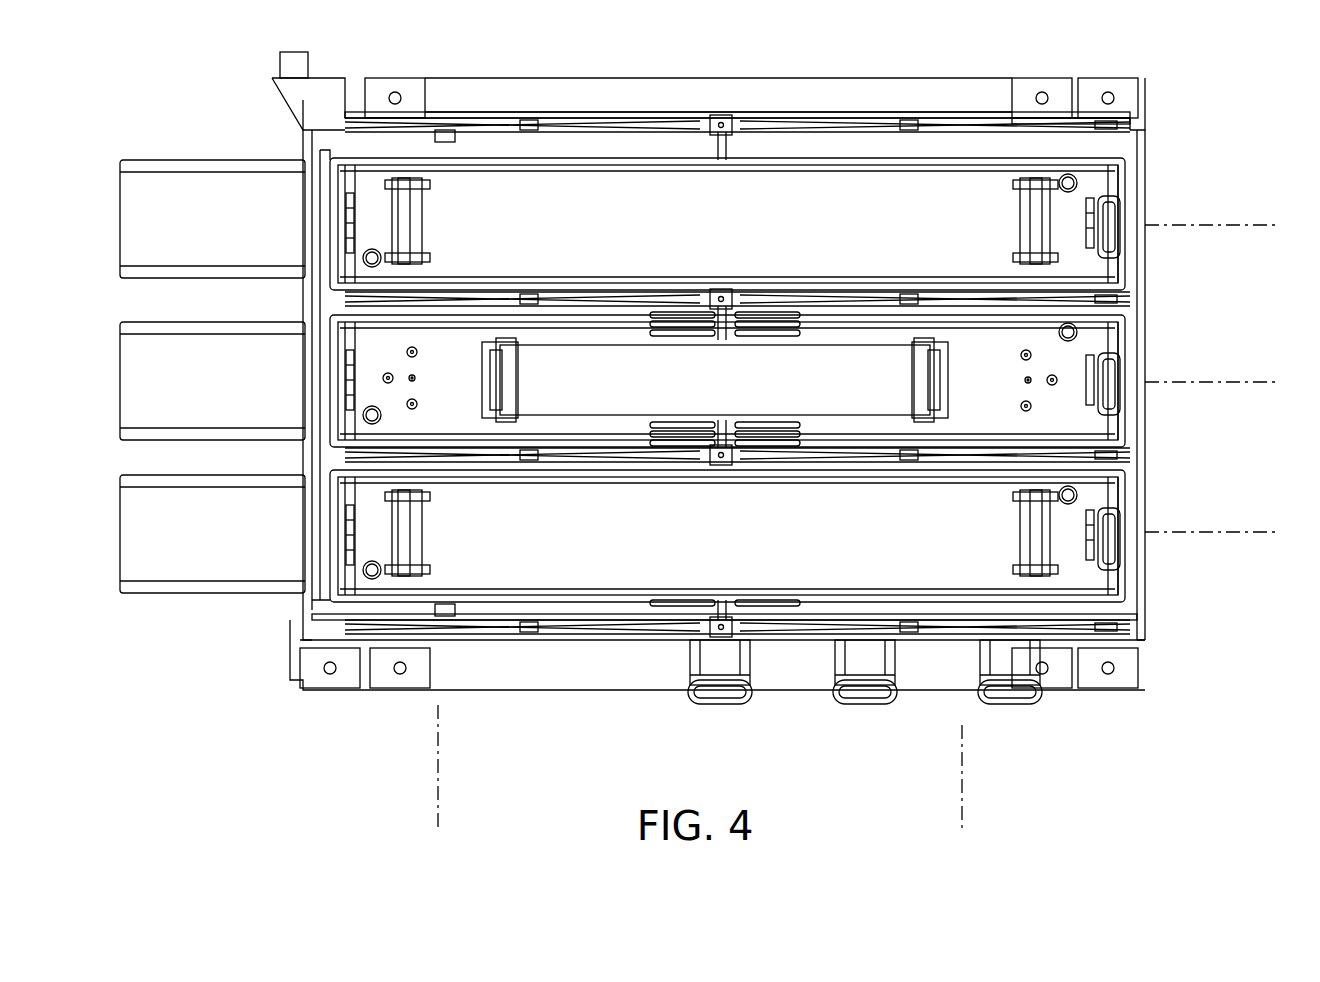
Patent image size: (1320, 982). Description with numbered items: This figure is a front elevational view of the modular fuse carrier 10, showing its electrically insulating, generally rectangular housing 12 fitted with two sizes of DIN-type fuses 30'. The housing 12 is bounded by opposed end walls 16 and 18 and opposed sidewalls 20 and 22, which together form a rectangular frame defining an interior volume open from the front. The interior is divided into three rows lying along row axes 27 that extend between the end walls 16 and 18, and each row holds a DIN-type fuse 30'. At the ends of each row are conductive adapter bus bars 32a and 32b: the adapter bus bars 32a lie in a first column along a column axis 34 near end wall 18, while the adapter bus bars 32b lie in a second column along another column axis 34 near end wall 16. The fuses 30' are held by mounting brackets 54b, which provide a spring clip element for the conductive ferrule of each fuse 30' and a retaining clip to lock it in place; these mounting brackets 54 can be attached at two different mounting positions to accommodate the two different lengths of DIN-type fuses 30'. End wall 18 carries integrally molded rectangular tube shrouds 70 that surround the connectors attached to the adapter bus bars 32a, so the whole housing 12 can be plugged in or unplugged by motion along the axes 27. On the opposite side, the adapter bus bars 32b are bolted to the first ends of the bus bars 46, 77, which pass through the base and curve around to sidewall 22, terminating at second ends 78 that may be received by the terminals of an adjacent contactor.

The modular fuse carrier 10 is at (1232, 102).
The housing 12 is at (1214, 679).
The end wall 16 is at (1148, 163).
The end wall 18 is at (286, 622).
The sidewall 20 is at (497, 115).
The sidewall 22 is at (511, 648).
The row axes 27 is at (1225, 228).
The DIN-type fuses 30' is at (727, 380).
The adapter bus bar 32a is at (445, 400).
The adapter bus bar 32b is at (1055, 418).
The column axis 34 is at (440, 760).
The terminal socket 46, 77 is at (1113, 240).
The mounting brackets 54 is at (1040, 640).
The mounting bracket 54b is at (517, 340).
The rectangular tube shrouds 70 is at (170, 480).
The second ends 78 is at (975, 695).